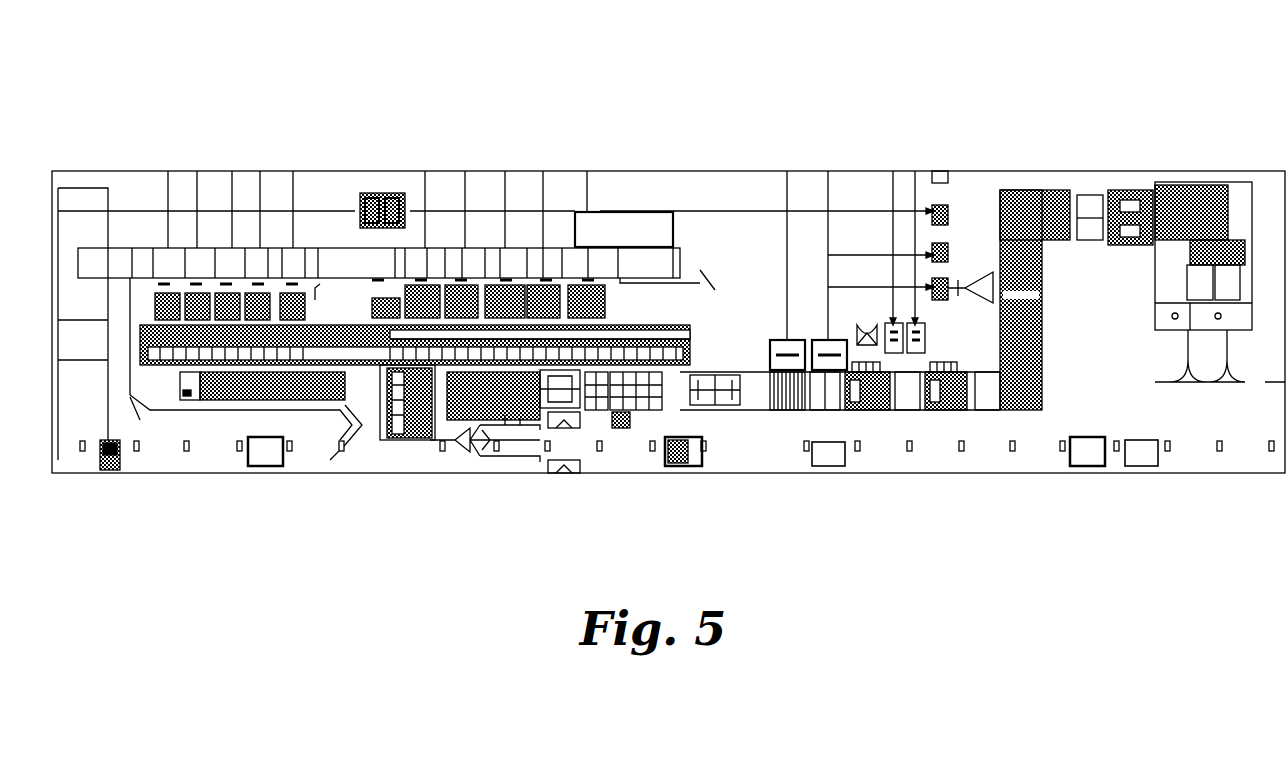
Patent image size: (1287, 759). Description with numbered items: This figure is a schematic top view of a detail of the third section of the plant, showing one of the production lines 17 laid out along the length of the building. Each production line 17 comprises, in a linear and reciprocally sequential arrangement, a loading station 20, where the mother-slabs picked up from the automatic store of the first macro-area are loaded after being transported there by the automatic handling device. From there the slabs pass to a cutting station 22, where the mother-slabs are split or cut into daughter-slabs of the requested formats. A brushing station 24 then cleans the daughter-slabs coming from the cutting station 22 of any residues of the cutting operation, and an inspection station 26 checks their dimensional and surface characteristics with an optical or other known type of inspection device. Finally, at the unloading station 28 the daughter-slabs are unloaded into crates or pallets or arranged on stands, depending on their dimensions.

The production line 17 is at (668, 322).
The loading station 20 is at (1230, 335).
The cutting station 22 is at (992, 259).
The brushing station 24 is at (723, 366).
The inspection station 26 is at (598, 418).
The unloading station 28 is at (243, 284).